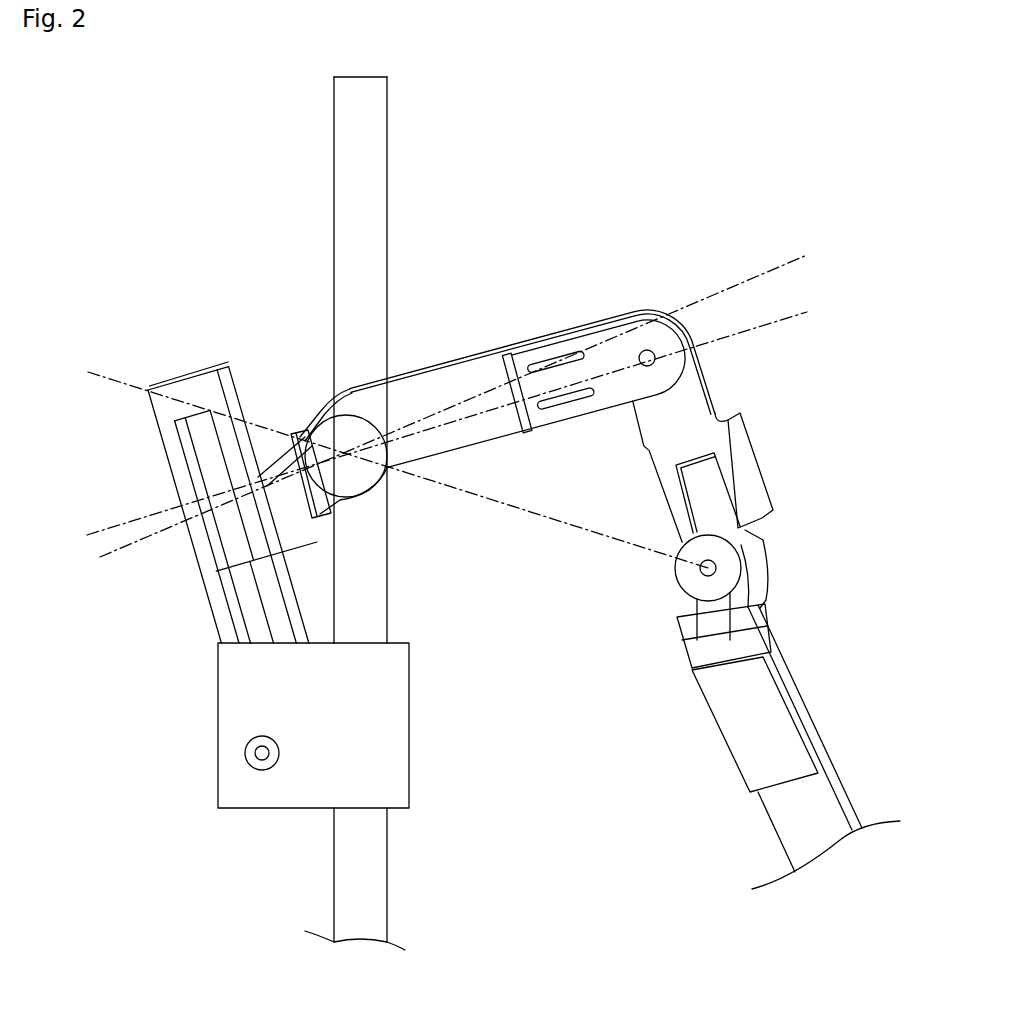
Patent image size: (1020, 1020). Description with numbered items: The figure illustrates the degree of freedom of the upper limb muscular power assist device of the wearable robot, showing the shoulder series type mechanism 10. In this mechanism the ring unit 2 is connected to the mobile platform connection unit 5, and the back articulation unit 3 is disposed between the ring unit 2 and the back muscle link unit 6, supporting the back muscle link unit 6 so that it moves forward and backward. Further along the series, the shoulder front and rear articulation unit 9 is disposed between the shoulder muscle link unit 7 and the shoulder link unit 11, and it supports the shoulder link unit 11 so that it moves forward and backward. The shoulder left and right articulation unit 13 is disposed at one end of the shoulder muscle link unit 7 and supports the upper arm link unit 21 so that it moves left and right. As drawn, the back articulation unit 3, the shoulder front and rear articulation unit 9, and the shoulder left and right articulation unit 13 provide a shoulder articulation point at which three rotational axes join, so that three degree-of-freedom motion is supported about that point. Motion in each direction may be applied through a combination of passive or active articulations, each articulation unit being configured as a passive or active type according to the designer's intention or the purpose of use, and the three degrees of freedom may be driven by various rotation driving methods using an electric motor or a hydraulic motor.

The ring unit 2 is at (178, 466).
The back articulation unit 3 is at (268, 440).
The mobile platform connection unit 5 is at (186, 628).
The back muscle link unit 6 is at (333, 413).
The shoulder muscle link unit 7 is at (447, 384).
The shoulder front and rear articulation unit 9 is at (678, 366).
The shoulder series type mechanism 10 is at (678, 298).
The shoulder link unit 11 is at (758, 462).
The shoulder left and right articulation unit 13 is at (752, 570).
The upper arm link unit 21 is at (826, 790).